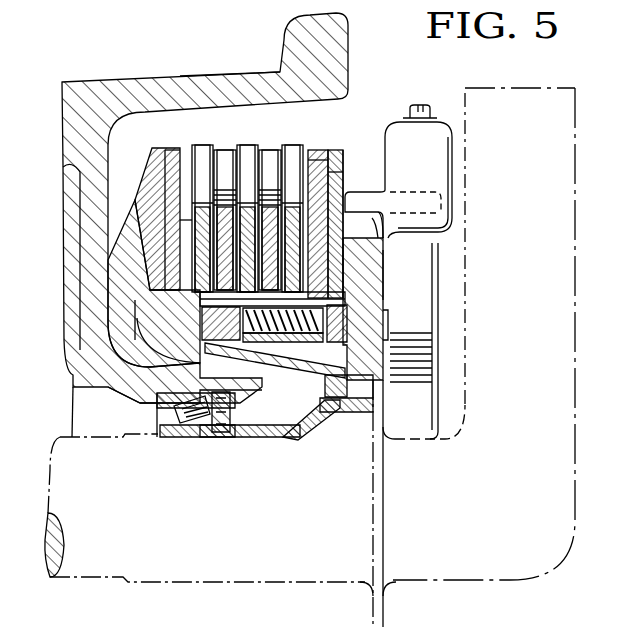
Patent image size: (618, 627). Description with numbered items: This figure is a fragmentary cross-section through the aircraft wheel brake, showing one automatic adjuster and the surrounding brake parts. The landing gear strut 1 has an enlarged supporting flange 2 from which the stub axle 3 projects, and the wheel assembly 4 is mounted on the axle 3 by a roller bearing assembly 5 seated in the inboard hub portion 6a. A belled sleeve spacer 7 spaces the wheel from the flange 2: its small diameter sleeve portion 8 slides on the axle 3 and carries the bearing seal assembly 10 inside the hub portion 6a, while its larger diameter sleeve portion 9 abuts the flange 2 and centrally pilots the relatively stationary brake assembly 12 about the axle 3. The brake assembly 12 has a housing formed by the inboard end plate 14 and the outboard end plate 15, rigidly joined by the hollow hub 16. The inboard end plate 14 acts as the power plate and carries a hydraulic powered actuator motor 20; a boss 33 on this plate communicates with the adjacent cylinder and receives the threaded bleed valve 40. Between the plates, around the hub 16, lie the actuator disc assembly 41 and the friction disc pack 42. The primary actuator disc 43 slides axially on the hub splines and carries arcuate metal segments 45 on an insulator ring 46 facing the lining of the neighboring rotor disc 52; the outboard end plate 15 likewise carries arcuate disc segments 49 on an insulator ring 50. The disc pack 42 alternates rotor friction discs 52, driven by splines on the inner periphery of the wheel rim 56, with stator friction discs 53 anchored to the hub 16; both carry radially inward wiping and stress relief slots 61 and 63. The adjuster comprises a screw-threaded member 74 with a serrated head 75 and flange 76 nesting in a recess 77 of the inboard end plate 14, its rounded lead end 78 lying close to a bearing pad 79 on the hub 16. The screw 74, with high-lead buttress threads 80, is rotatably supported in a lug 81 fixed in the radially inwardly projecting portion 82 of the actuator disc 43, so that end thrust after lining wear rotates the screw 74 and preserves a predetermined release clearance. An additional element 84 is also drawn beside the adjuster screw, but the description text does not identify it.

The airplane landing gear strut 1 is at (576, 280).
The supporting flange 2 is at (385, 493).
The stub shaft or axle 3 is at (205, 508).
The wheel assembly 4 is at (280, 68).
The roller bearing assembly 5 is at (170, 430).
The inboard hub portion 6a is at (205, 392).
The sleeve spacer 7 is at (305, 438).
The small diameter sleeve portion 8 is at (252, 433).
The larger diameter sleeve portion 9 is at (352, 412).
The bearing seal assembly 10 is at (222, 432).
The brake assembly 12 is at (346, 146).
The inboard end plate 14 is at (365, 292).
The outboard end plate 15 is at (148, 300).
The hollow hub 16 is at (208, 369).
The hydraulic powered actuator motor 20 is at (432, 243).
The boss 33 is at (398, 180).
The bleed valve 40 is at (424, 104).
The actuator disc assembly 41 is at (336, 147).
The friction disc pack 42 is at (252, 199).
The primary actuator disc 43 is at (336, 180).
The arcuate metal segments 45 is at (316, 158).
The insulator ring 46 is at (322, 167).
The arcuate disc segments 49 is at (160, 165).
The insulator ring 50 is at (172, 195).
The rotor friction disc 52 is at (212, 232).
The stator friction disc 53 is at (230, 258).
The wheel or tire rim 56 is at (232, 76).
The slots 61 is at (290, 165).
The wiping and stress relief slots 63 is at (248, 207).
The screw-threaded member 74 is at (273, 312).
The serrated head 75 is at (352, 335).
The flange 76 is at (383, 222).
The recess 77 is at (362, 290).
The rounded lead end 78 is at (248, 312).
The bearing pad or boss 79 is at (245, 305).
The buttress threads 80 is at (285, 330).
The lug 81 is at (317, 335).
The radially inwardly projecting portion 82 is at (330, 330).
The seal 84 is at (352, 304).